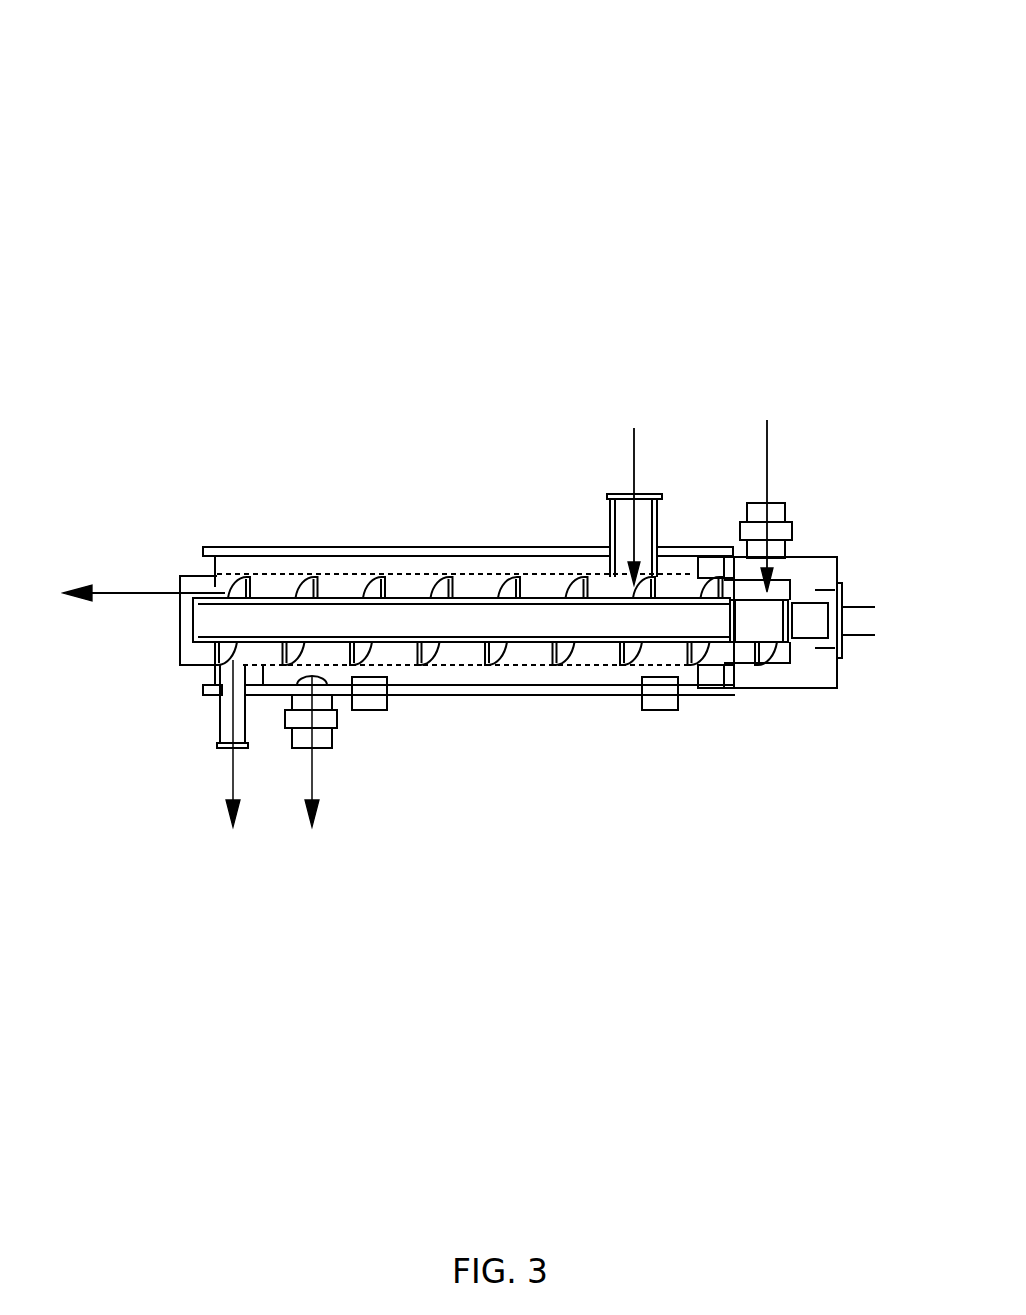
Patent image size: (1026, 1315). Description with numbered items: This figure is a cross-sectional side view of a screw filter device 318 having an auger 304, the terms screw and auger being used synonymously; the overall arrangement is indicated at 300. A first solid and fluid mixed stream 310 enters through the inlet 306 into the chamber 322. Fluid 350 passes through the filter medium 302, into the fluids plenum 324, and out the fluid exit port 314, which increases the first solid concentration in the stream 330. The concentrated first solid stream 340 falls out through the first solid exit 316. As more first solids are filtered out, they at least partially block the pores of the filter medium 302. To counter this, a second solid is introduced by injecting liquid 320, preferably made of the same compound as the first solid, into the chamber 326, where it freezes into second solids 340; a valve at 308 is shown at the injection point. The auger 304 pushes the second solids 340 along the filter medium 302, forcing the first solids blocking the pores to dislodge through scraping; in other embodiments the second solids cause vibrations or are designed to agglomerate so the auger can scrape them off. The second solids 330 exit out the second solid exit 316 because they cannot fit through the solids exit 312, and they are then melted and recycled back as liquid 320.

The screw conveyor reactor system 300 is at (188, 63).
The filter medium 302 is at (353, 573).
The auger 304 is at (488, 598).
The inlet 306 is at (605, 494).
The inlet valve 308 is at (770, 503).
The first solid and fluid mixed stream 310 is at (635, 494).
The solids exit 312 is at (217, 745).
The fluid exit port 314 is at (335, 748).
The first solid exit 316 is at (180, 577).
The screw filter device 318 is at (735, 693).
The liquid 320 is at (768, 491).
The chamber 322 is at (568, 583).
The fluids plenum 324 is at (502, 673).
The chamber 326 is at (787, 585).
The stream 330 is at (118, 594).
The concentrated first solid stream 340 is at (245, 759).
The fluid 350 is at (318, 806).